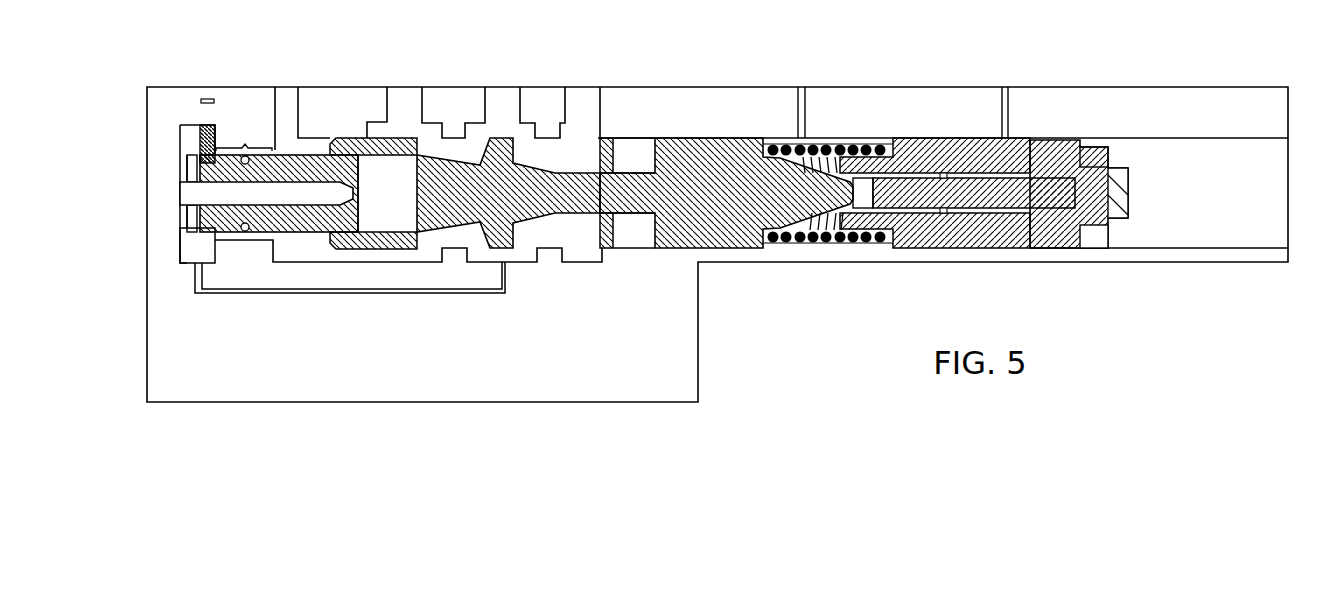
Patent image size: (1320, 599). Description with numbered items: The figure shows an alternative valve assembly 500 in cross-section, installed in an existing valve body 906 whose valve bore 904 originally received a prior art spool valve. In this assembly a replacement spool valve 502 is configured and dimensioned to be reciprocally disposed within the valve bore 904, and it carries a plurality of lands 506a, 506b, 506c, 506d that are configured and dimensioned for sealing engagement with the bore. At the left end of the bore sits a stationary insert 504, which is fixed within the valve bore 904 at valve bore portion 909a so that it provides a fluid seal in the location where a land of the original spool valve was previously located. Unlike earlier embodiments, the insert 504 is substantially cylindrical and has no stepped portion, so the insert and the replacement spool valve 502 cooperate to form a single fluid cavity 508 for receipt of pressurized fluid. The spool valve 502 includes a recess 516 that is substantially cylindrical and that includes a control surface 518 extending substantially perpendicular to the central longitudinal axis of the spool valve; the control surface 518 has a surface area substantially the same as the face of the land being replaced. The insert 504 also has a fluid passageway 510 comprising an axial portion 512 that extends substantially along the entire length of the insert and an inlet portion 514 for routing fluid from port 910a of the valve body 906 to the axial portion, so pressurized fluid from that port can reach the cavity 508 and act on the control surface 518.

The valve assembly 500 is at (1236, 34).
The replacement spool valve 502 is at (667, 140).
The stationary insert 504 is at (280, 157).
The land 506a is at (370, 250).
The land 506b is at (502, 250).
The land 506c is at (604, 250).
The land 506d is at (730, 250).
The fluid cavity 508 is at (405, 190).
The fluid passageway 510 is at (180, 196).
The axial portion 512 is at (259, 199).
The inlet portion 514 is at (197, 232).
The recess 516 is at (422, 160).
The control surface 518 is at (388, 170).
The valve bore 904 is at (1195, 218).
The valve body 906 is at (1122, 100).
The valve bore portion 909a is at (236, 140).
The port 910a is at (257, 295).